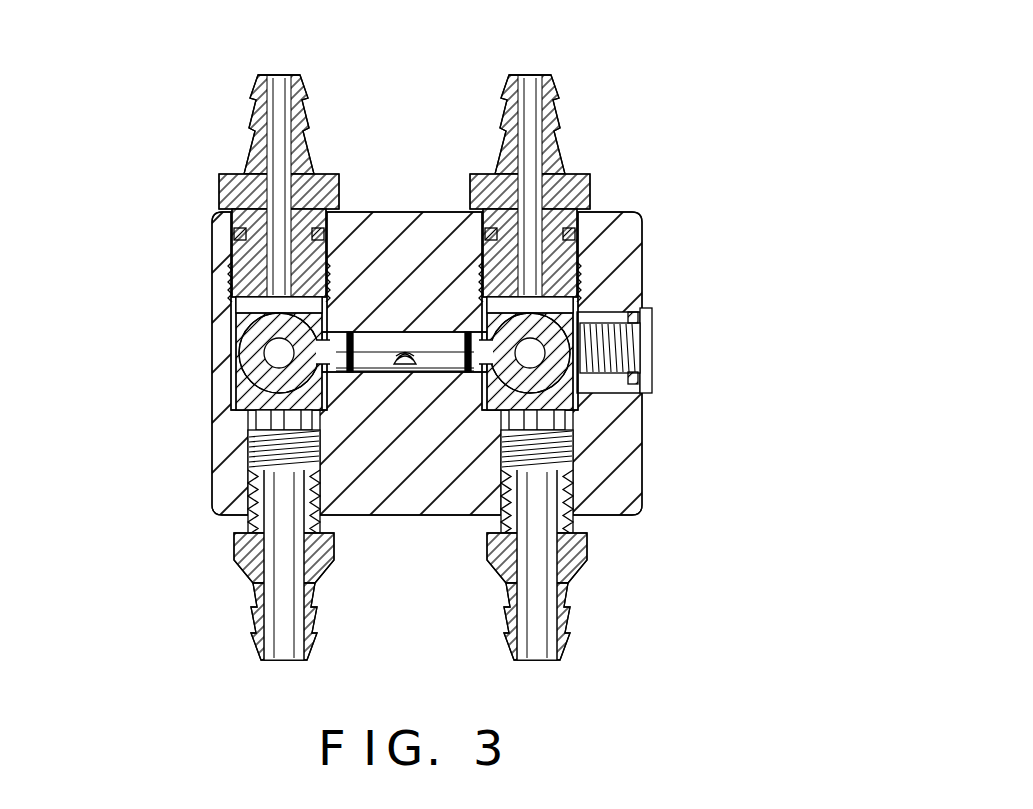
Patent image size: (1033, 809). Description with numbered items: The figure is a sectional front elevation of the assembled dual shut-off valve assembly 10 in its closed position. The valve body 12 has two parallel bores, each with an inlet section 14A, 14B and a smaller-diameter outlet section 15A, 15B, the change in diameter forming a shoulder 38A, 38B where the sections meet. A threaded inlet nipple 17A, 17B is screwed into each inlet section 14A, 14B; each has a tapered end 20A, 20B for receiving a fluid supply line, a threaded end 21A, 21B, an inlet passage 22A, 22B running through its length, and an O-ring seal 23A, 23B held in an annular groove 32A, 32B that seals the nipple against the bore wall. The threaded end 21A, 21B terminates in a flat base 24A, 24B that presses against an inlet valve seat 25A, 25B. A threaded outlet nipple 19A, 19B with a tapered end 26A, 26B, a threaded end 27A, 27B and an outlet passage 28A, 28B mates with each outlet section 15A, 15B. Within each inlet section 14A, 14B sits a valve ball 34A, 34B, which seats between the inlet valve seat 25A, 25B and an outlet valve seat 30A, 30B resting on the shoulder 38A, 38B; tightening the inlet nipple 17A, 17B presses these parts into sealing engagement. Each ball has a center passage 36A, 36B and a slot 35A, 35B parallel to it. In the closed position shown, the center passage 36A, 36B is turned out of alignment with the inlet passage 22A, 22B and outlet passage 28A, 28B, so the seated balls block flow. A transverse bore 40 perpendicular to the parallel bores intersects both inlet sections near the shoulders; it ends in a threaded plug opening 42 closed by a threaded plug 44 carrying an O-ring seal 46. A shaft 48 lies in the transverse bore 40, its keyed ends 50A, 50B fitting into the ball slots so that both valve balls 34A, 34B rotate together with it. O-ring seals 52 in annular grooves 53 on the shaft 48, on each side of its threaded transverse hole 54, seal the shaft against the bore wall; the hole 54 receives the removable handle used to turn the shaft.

The dual shut-off valve assembly 10 is at (722, 159).
The valve body 12 is at (214, 242).
The inlet section 14A is at (236, 244).
The inlet section 14B is at (582, 248).
The outlet section 15A is at (235, 543).
The outlet section 15B is at (580, 549).
The inlet nipple 17A is at (336, 175).
The inlet nipple 17B is at (476, 175).
The outlet nipple 19A is at (237, 563).
The outlet nipple 19B is at (592, 568).
The tapered end 20A is at (235, 154).
The tapered end 20B is at (607, 153).
The threaded end 21A is at (250, 272).
The threaded end 21B is at (572, 268).
The inlet passage 22A is at (283, 113).
The inlet passage 22B is at (535, 105).
The O-ring seal 23A is at (214, 235).
The O-ring seal 23B is at (575, 234).
The flat base 24A is at (240, 302).
The flat base 24B is at (578, 300).
The inlet valve seat 25A is at (245, 328).
The inlet valve seat 25B is at (582, 320).
The tapered end 26A is at (262, 612).
The tapered end 26B is at (560, 620).
The threaded end 27A is at (252, 522).
The threaded end 27B is at (586, 530).
The outlet passage 28A is at (305, 630).
The outlet passage 28B is at (538, 632).
The outlet valve seat 30A is at (240, 420).
The outlet valve seat 30B is at (580, 422).
The annular groove 32A is at (242, 190).
The annular groove 32B is at (585, 178).
The valve ball 34A is at (252, 376).
The valve ball 34B is at (560, 372).
The slot 35A is at (325, 240).
The slot 35B is at (488, 258).
The center passage 36A is at (279, 352).
The center passage 36B is at (535, 352).
The shoulder 38A is at (256, 432).
The shoulder 38B is at (585, 440).
The transverse bore 40 is at (438, 372).
The plug opening 42 is at (585, 375).
The threaded plug 44 is at (580, 405).
The O-ring seal 46 is at (653, 388).
The shaft 48 is at (378, 372).
The shaft end 50A is at (310, 452).
The shaft end 50B is at (500, 452).
The O-ring seals 52 is at (330, 372).
The annular grooves 53 is at (351, 340).
The transverse hole 54 is at (405, 368).